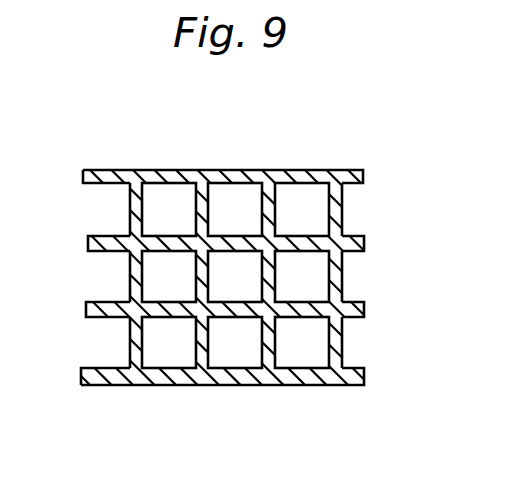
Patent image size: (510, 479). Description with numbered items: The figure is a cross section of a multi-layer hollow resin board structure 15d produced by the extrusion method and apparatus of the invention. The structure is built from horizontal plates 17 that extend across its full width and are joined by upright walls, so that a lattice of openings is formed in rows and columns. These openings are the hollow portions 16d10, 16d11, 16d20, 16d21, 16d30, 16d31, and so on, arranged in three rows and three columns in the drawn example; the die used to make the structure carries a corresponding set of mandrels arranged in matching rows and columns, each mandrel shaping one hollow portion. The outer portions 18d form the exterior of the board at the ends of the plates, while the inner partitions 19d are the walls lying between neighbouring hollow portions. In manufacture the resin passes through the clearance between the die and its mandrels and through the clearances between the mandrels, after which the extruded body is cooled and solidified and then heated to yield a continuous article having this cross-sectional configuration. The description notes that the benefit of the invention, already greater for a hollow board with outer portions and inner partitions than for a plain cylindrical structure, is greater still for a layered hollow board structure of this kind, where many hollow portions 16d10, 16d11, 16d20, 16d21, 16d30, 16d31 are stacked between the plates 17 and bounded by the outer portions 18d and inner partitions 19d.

The lattice structure 15d is at (241, 158).
The hollow portion 16d10 is at (148, 212).
The hollow portion 16d11 is at (228, 202).
The hollow portion 16d20 is at (148, 285).
The hollow portion 16d21 is at (250, 290).
The hollow portion 16d30 is at (167, 352).
The hollow portion 16d31 is at (231, 350).
The horizontal partition plate 17 is at (308, 171).
The outer portion 18d is at (363, 177).
The inner partition 19d is at (335, 216).